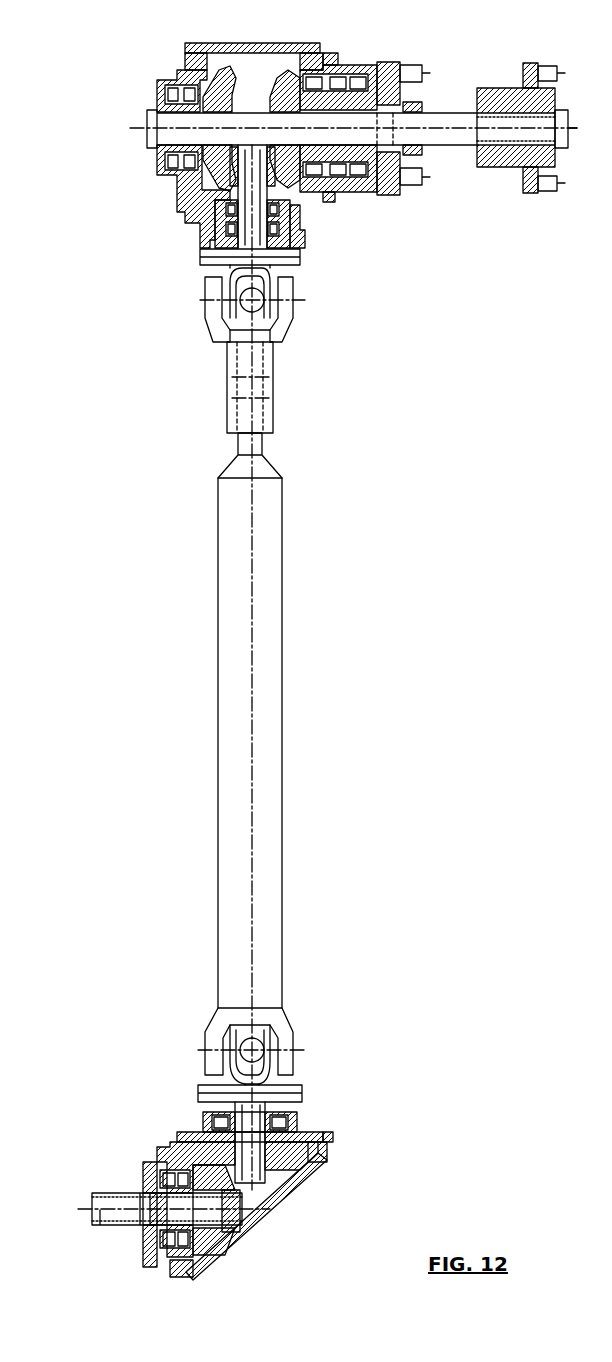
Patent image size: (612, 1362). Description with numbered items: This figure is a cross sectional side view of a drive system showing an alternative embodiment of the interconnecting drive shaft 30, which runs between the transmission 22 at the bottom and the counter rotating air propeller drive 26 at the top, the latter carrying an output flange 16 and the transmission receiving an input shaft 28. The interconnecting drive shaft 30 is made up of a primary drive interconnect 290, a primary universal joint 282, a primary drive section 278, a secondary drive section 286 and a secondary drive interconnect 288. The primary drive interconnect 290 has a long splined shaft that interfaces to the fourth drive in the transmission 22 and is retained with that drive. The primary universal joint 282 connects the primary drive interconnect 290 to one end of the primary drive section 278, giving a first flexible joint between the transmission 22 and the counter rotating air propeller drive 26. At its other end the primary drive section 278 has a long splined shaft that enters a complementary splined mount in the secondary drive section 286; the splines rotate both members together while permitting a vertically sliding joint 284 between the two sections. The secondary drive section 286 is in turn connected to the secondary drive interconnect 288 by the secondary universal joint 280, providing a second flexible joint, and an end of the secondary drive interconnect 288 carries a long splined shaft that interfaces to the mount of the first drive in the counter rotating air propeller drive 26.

The output flange 16 is at (487, 55).
The transmission 22 is at (331, 1180).
The counter rotating air propeller drive 26 is at (348, 62).
The input shaft 28 is at (97, 1223).
The interconnecting drive shaft 30 is at (296, 664).
The primary drive section 278 is at (282, 508).
The secondary universal joint 280 is at (316, 285).
The primary universal joint 282 is at (307, 1040).
The sliding joint 284 is at (273, 405).
The secondary drive section 286 is at (180, 274).
The secondary drive interconnect 288 is at (317, 249).
The primary drive interconnect 290 is at (303, 1076).